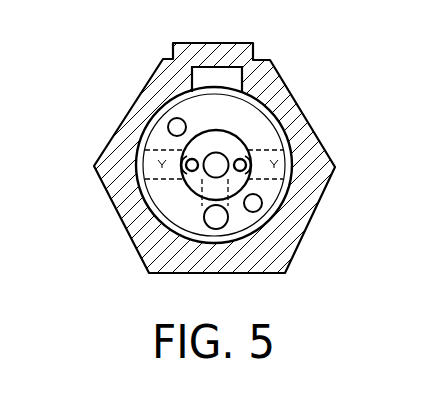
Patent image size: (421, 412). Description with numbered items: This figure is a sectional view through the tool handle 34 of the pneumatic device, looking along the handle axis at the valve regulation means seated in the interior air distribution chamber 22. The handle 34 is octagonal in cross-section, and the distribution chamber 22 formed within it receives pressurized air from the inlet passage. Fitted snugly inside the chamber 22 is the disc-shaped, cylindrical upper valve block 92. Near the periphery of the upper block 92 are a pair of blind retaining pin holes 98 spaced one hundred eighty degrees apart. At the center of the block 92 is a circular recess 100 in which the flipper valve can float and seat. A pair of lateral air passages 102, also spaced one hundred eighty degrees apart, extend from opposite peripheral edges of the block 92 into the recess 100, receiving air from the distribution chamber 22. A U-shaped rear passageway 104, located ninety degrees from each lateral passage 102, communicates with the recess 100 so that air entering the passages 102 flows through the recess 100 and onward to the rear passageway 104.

The air distribution chamber 22 is at (219, 80).
The tool handle 34 is at (252, 124).
The upper valve block 92 is at (302, 92).
The blind retaining pin holes 98 is at (170, 121).
The circular recess 100 is at (207, 130).
The lateral air passages 102 is at (145, 150).
The rear passageway 104 is at (205, 208).